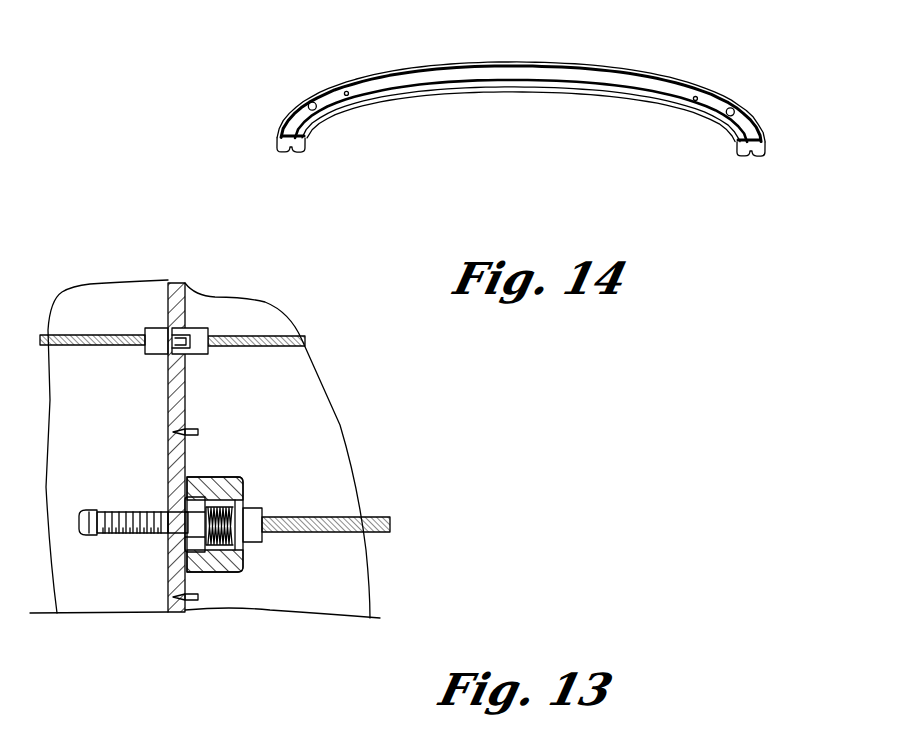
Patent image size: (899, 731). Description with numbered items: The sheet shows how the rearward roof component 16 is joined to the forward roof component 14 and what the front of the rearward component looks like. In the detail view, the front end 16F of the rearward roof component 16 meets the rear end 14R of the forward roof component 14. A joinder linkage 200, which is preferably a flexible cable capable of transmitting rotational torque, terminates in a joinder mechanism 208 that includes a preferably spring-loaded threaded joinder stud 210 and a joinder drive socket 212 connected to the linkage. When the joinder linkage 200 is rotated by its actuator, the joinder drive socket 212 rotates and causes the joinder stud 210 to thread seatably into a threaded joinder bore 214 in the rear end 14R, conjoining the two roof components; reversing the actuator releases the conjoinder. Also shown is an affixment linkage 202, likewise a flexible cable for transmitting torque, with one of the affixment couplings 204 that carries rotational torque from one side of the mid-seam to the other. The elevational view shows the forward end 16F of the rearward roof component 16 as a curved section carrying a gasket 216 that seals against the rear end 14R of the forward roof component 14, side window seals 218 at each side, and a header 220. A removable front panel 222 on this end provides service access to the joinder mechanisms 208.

In FIG. 13, the forward roof component 14 is at (118, 282).
In FIG. 14, the rearward roof component 16 is at (643, 70).
In FIG. 13, the rearward roof component 16 is at (222, 292).
In FIG. 13, the rear end of the forward roof component 14R is at (185, 387).
In FIG. 14, the front end of the rearward roof component 16F is at (712, 100).
In FIG. 13, the front end of the rearward roof component 16F is at (168, 452).
In FIG. 13, the joinder linkages 200 is at (313, 551).
In FIG. 13, the affixment linkages 202 is at (250, 325).
In FIG. 13, the affixment couplings 204 is at (150, 369).
In FIG. 13, the joinder mechanism 208 is at (258, 481).
In FIG. 13, the joinder stud 210 is at (128, 537).
In FIG. 13, the joinder drive socket 212 is at (225, 477).
In FIG. 13, the threaded joinder bore 214 is at (104, 537).
In FIG. 14, the gasket 216 is at (430, 64).
In FIG. 14, the side window seals 218 is at (305, 153).
In FIG. 14, the header 220 is at (436, 98).
In FIG. 14, the removable front panel 222 is at (530, 74).
In FIG. 13, the removable front panel 222 is at (181, 482).